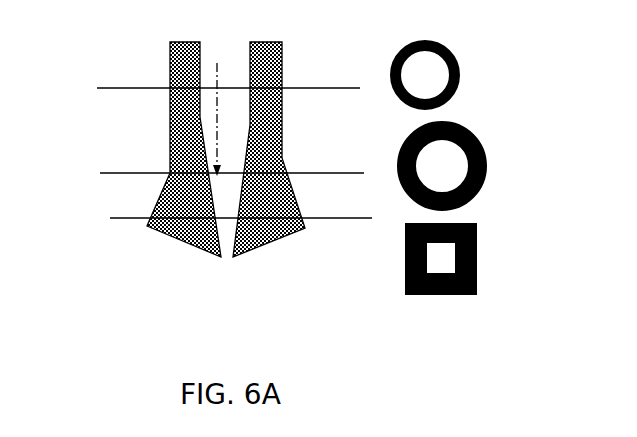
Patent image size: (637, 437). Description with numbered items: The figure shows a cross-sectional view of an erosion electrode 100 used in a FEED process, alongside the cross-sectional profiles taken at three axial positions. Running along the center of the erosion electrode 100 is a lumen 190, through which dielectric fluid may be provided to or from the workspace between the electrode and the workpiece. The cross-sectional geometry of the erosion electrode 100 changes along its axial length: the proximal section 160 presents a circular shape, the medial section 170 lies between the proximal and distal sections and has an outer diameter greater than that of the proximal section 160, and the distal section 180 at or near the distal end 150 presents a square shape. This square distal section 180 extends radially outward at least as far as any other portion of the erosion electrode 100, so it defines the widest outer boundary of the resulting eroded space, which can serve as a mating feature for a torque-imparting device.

The erosion electrode 100 is at (182, 50).
The distal end 150 is at (218, 255).
The proximal section 160 is at (118, 88).
The medial section 170 is at (128, 173).
The distal section 180 is at (137, 217).
The lumen 190 is at (218, 135).